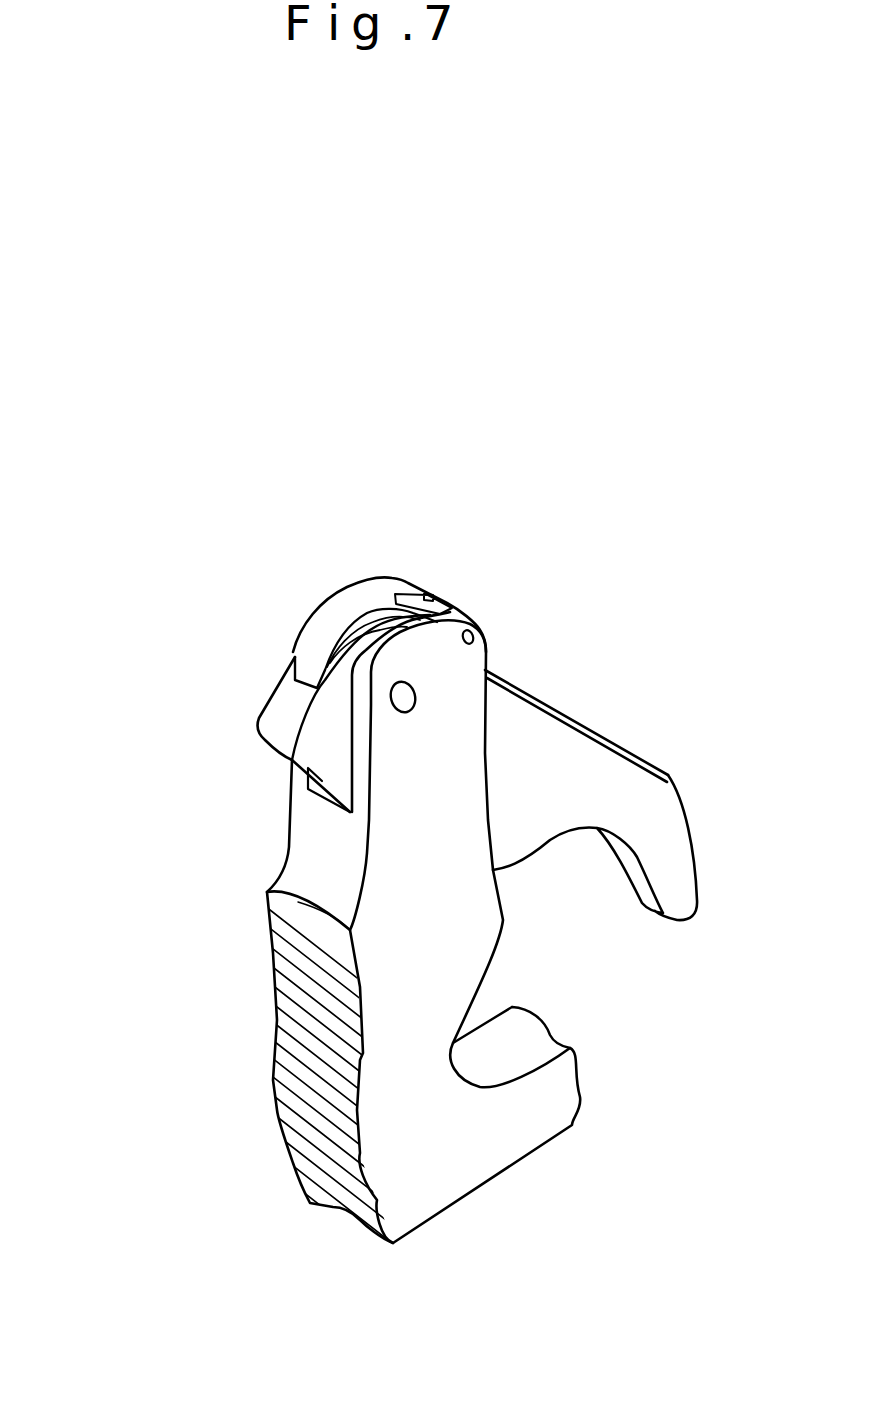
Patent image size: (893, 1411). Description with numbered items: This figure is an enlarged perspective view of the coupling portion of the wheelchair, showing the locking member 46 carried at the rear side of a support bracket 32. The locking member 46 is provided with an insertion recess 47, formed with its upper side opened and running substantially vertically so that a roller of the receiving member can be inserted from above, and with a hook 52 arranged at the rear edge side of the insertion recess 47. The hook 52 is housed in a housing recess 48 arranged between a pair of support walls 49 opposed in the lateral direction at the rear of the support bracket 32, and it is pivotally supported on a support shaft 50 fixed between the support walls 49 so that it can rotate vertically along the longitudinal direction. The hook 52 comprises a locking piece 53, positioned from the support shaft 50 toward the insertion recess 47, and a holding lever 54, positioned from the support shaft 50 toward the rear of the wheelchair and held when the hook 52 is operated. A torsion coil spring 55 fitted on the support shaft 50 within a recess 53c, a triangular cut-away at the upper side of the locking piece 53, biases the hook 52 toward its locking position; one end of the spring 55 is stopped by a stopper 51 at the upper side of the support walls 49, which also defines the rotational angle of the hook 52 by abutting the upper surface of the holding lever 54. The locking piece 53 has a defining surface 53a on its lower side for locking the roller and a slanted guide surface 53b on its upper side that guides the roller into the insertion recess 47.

The support bracket 32 is at (467, 1155).
The locking member 46 is at (184, 593).
The insertion recess 47 is at (305, 833).
The housing recess 48 is at (350, 800).
The support wall 49 is at (325, 608).
The support shaft 50 is at (404, 682).
The stopper 51 is at (422, 593).
The hook 52 is at (618, 683).
The locking piece 53 is at (330, 728).
The defining surface 53a is at (292, 764).
The guide surface 53b is at (288, 687).
The recess 53c is at (308, 672).
The holding lever 54 is at (652, 805).
The torsion coil spring 55 is at (362, 620).